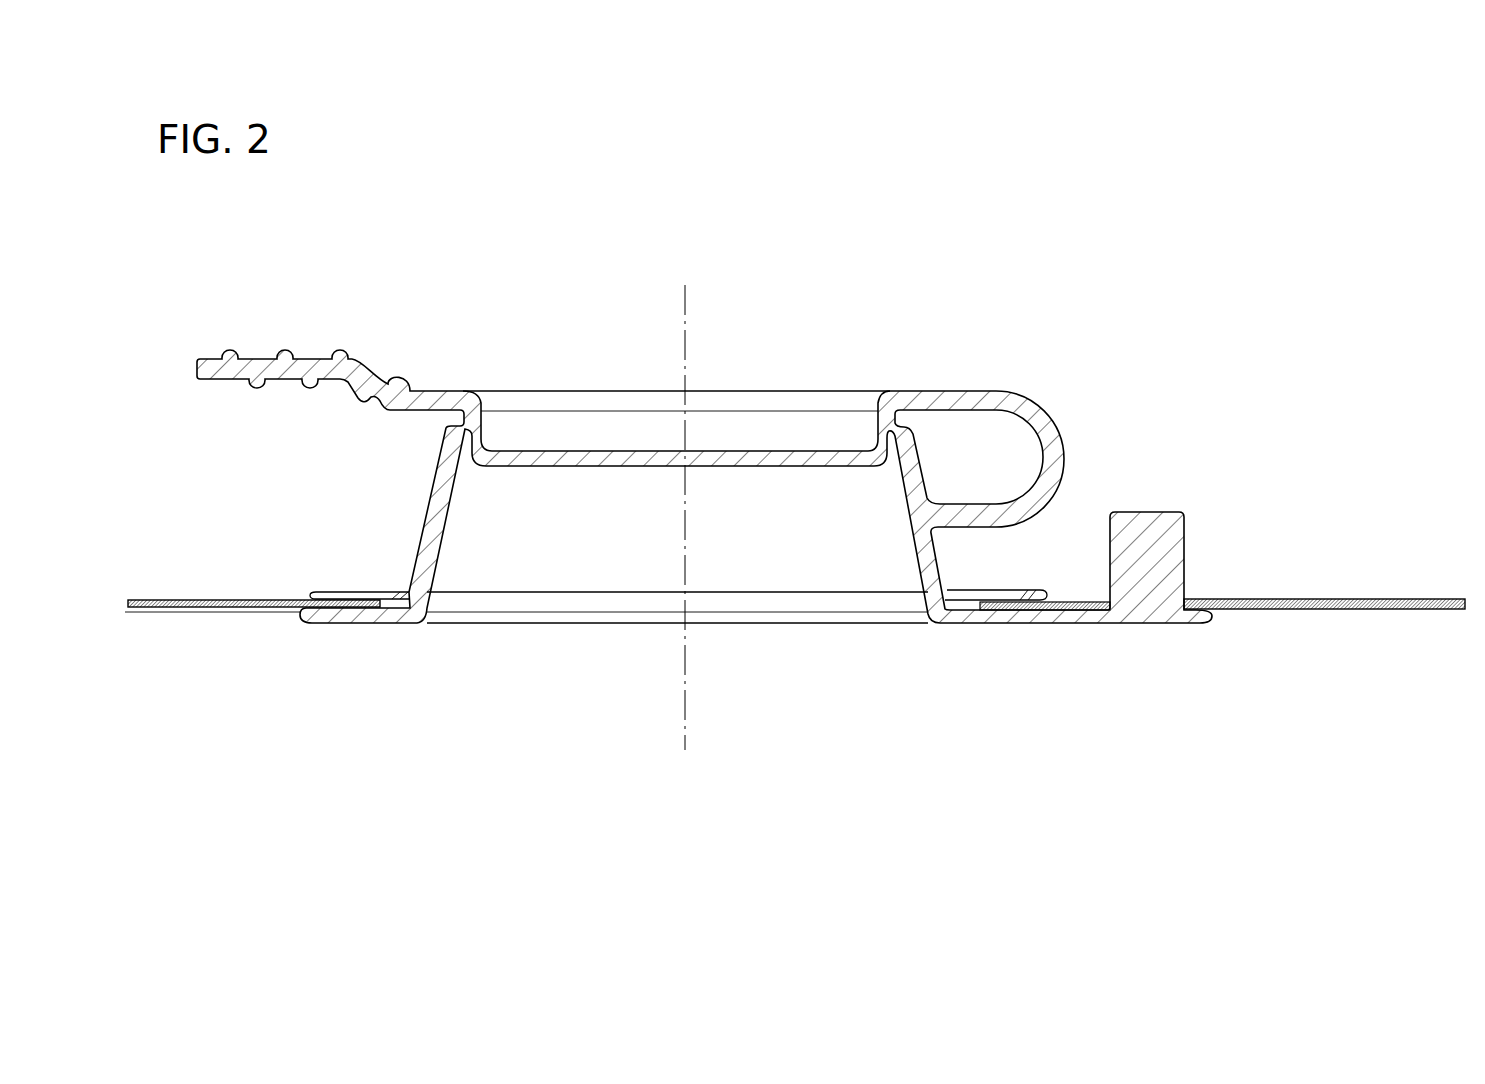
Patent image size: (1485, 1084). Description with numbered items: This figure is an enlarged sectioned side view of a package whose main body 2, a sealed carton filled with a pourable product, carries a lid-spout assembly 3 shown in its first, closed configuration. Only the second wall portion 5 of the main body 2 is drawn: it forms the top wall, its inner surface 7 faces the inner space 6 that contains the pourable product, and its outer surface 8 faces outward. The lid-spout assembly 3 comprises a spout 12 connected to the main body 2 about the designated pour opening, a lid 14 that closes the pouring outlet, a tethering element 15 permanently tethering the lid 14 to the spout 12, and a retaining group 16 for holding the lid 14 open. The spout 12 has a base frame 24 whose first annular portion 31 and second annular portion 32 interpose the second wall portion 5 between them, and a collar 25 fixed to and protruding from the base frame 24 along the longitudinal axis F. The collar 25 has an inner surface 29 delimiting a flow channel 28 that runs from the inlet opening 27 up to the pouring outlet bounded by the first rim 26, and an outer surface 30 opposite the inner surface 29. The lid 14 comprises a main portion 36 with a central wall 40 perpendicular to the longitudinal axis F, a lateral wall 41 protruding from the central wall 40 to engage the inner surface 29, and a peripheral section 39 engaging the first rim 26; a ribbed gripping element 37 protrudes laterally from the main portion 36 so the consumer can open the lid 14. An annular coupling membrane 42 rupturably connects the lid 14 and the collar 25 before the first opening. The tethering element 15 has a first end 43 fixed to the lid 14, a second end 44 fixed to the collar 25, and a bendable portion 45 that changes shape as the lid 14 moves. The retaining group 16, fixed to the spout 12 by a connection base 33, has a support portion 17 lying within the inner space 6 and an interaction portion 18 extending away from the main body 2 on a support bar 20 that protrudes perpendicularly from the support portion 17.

The main body 2 is at (1298, 575).
The lid-spout assembly 3 is at (1092, 302).
The second wall portion 5 is at (163, 600).
The inner space 6 is at (240, 638).
The inner surface 7 is at (1357, 609).
The outer surface 8 is at (1355, 600).
The spout 12 is at (250, 460).
The lid 14 is at (724, 330).
The tethering element 15 is at (1062, 403).
The retaining group 16 is at (1220, 487).
The support portion 17 is at (1137, 624).
The interaction portion 18 is at (1205, 545).
The support bar 20 is at (1115, 556).
The base frame 24 is at (347, 558).
The collar 25 is at (405, 478).
The first rim 26 is at (908, 428).
The inlet opening 27 is at (575, 628).
The flow channel 28 is at (775, 575).
The inner surface 29 is at (440, 533).
The outer surface 30 is at (430, 527).
The first annular portion 31 is at (317, 592).
The second annular portion 32 is at (953, 626).
The connection base 33 is at (1065, 624).
The main portion 36 is at (568, 384).
The gripping element 37 is at (213, 365).
The peripheral section 39 is at (438, 393).
The central wall 40 is at (725, 466).
The lateral wall 41 is at (842, 410).
The coupling membrane 42 is at (462, 422).
The first end 43 is at (935, 397).
The second end 44 is at (975, 513).
The bendable portion 45 is at (1060, 450).
The longitudinal axis F is at (680, 322).